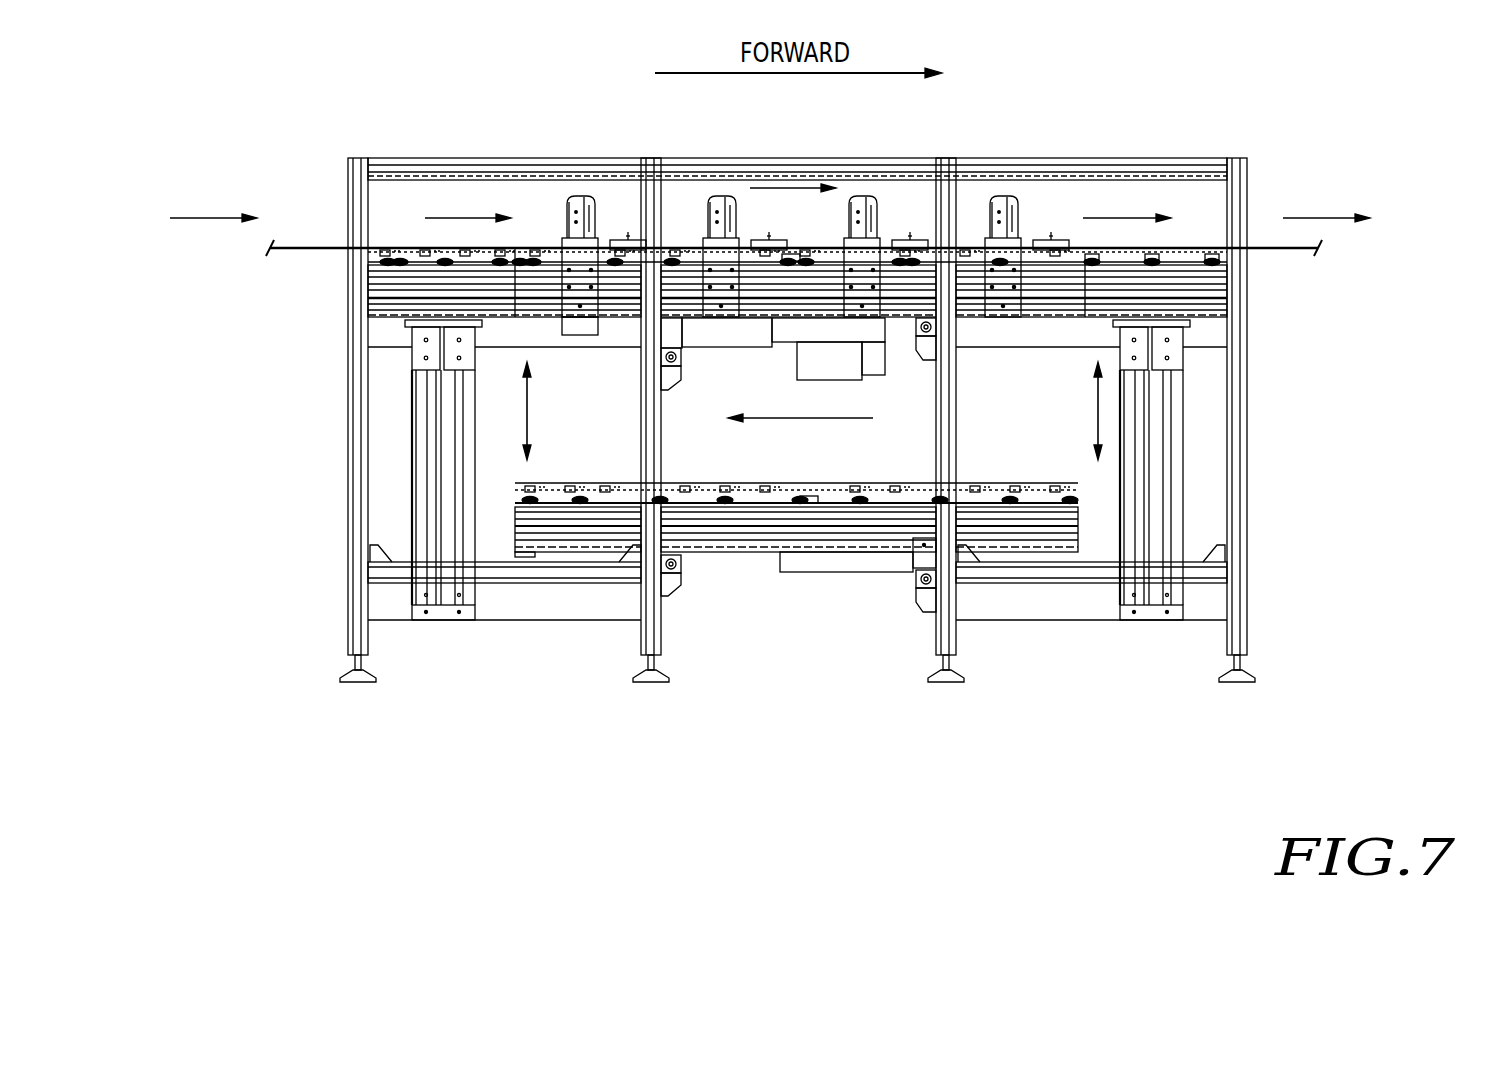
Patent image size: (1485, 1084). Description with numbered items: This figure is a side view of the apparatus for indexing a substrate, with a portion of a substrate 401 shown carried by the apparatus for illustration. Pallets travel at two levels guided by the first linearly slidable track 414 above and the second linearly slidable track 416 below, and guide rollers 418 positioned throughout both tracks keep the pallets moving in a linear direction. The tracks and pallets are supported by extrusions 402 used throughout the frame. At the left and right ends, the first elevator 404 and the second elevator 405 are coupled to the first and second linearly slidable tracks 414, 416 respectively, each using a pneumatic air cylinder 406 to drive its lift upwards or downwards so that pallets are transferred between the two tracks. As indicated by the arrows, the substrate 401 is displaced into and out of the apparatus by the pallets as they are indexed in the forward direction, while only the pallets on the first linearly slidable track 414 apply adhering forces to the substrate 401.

The substrate 401 is at (315, 248).
The extrusions 402 is at (348, 572).
The first elevator 404 is at (442, 675).
The second elevator 405 is at (1152, 675).
The pneumatic air cylinder 406 is at (440, 418).
The first linearly slidable track 414 is at (1043, 290).
The second linearly slidable track 416 is at (747, 510).
The guide rollers 418 is at (790, 247).